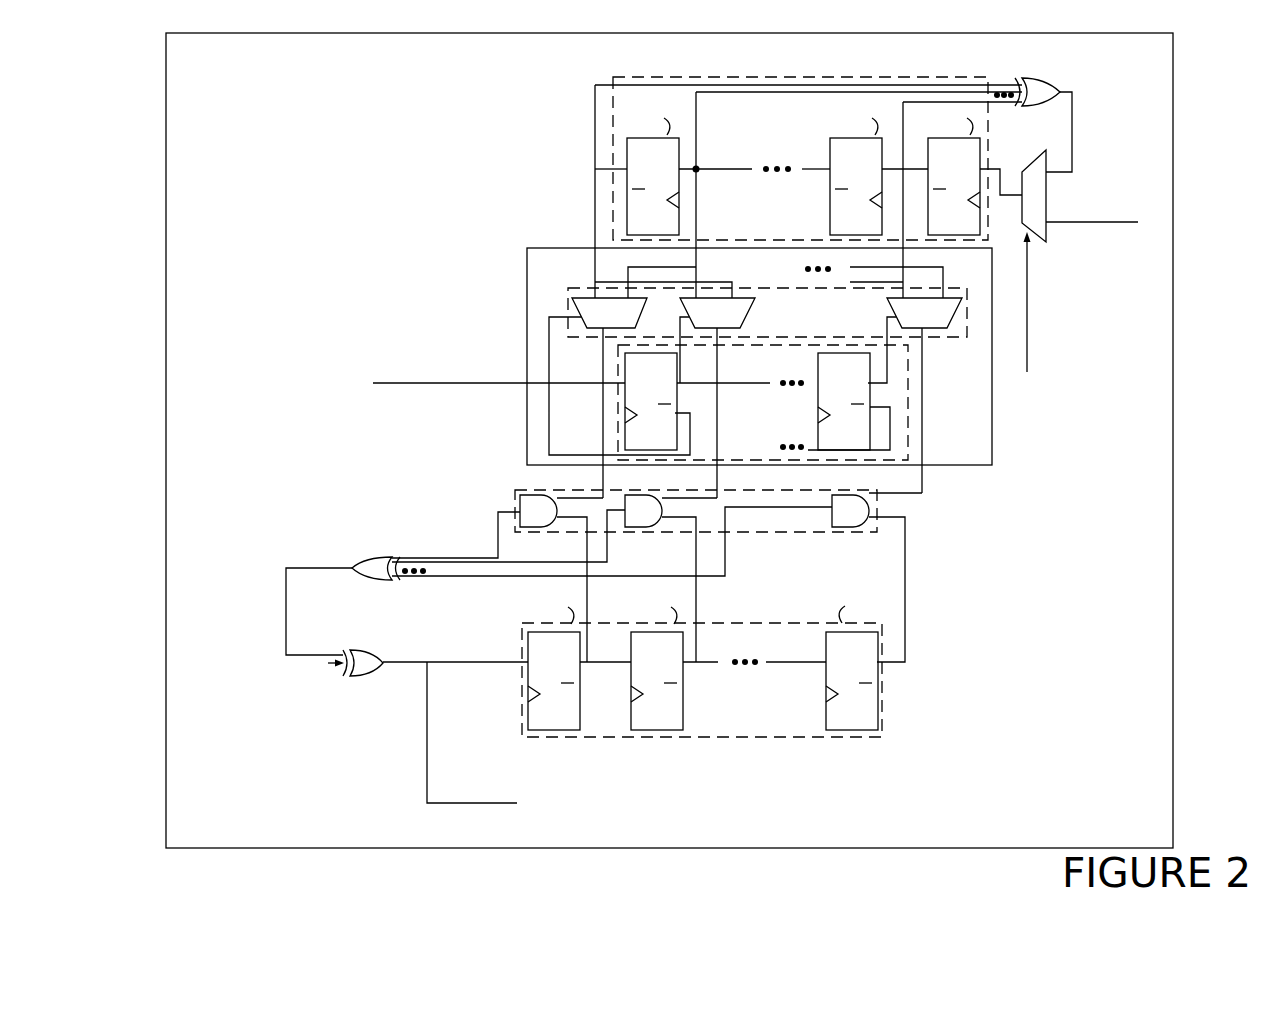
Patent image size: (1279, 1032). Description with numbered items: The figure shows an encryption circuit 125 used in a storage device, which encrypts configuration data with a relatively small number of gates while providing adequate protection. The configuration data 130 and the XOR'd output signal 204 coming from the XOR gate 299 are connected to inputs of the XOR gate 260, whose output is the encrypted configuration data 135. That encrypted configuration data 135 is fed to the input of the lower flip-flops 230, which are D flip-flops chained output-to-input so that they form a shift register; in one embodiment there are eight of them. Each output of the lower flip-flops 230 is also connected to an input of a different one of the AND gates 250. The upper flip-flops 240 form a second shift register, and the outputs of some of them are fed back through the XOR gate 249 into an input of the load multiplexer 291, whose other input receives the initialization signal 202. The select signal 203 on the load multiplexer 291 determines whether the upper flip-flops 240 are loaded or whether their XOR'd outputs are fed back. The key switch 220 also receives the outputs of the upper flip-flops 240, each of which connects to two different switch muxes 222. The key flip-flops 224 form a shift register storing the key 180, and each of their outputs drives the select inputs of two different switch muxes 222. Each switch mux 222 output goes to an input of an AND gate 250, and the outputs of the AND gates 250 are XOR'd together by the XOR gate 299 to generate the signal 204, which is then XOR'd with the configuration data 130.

The encryption circuit 125 is at (669, 440).
The configuration data 130 is at (258, 689).
The encrypted configuration data 135 is at (611, 744).
The key 180 is at (479, 381).
The initialization signal 202 is at (1106, 219).
The select signal 203 is at (1068, 302).
The signal X204 204 is at (410, 644).
The key switch 220 is at (523, 249).
The switch muxes 222 is at (556, 298).
The key flip-flops 224 is at (616, 413).
The lower flip-flops 230 is at (893, 628).
The upper flip-flops 240 is at (604, 180).
The XOR gate 249 is at (1033, 125).
The AND gates 250 is at (881, 519).
The XOR gate 260 is at (355, 687).
The load multiplexer 291 is at (1046, 291).
The XOR gate 299 is at (356, 588).